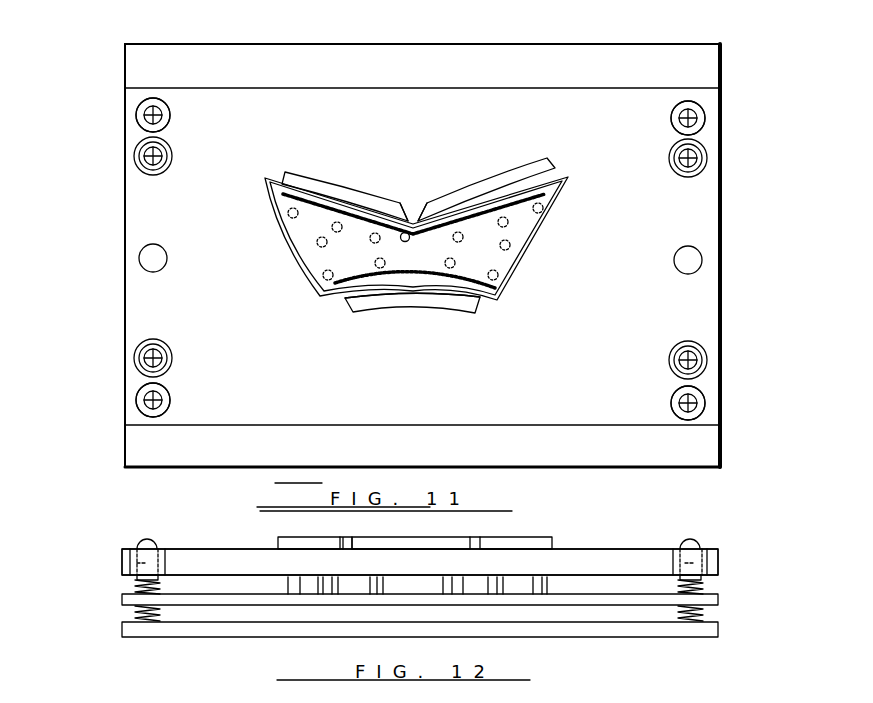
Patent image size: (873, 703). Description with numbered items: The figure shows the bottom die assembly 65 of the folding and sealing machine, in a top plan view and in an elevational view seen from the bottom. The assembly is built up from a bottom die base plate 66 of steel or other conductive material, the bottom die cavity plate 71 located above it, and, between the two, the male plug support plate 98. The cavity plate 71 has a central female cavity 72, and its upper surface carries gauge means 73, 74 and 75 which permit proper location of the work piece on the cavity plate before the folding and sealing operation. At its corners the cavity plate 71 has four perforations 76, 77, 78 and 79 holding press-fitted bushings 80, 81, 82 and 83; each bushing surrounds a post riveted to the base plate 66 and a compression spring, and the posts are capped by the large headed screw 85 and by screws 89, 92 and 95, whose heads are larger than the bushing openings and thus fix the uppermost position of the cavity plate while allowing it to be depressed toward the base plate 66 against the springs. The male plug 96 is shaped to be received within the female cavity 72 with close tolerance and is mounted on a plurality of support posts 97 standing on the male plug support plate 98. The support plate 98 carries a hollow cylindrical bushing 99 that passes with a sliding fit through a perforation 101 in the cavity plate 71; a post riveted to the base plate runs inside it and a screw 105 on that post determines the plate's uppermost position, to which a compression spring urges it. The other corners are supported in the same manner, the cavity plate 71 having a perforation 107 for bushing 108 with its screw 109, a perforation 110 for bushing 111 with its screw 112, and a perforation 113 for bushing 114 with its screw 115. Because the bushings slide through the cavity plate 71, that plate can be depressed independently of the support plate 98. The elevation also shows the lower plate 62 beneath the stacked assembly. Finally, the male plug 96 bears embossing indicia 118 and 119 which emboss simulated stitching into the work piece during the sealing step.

In FIG. 12, the base plate 62 is at (702, 630).
In FIG. 11, the bottom die assembly 65 is at (731, 60).
In FIG. 12, the bottom die assembly 65 is at (240, 552).
In FIG. 11, the bottom die base plate 66 is at (658, 57).
In FIG. 11, the bottom die cavity plate 71 is at (415, 102).
In FIG. 12, the bottom die cavity plate 71 is at (597, 558).
In FIG. 11, the female cavity 72 is at (571, 190).
In FIG. 11, the gauge means 73 is at (307, 177).
In FIG. 12, the gauge means 73 is at (296, 543).
In FIG. 11, the gauge means 74 is at (511, 175).
In FIG. 12, the gauge means 74 is at (517, 547).
In FIG. 11, the gauge means 75 is at (382, 298).
In FIG. 12, the gauge means 75 is at (370, 542).
In FIG. 11, the perforation 76 is at (704, 103).
In FIG. 11, the perforation 77 is at (170, 110).
In FIG. 11, the perforation 78 is at (172, 392).
In FIG. 11, the perforation 79 is at (702, 395).
In FIG. 11, the bushing 80 is at (697, 127).
In FIG. 11, the bushing 81 is at (160, 122).
In FIG. 11, the bushing 82 is at (160, 410).
In FIG. 11, the bushing 83 is at (700, 410).
In FIG. 11, the large headed screw 85 is at (705, 116).
In FIG. 11, the screw 89 is at (137, 112).
In FIG. 11, the screw 92 is at (136, 402).
In FIG. 11, the screw 95 is at (692, 412).
In FIG. 11, the male plug 96 is at (510, 267).
In FIG. 11, the support posts 97 is at (288, 216).
In FIG. 12, the support posts 97 is at (550, 587).
In FIG. 12, the male plug support plate 98 is at (717, 602).
In FIG. 11, the hollow cylindrical bushing 99 is at (698, 168).
In FIG. 11, the perforation 101 is at (695, 175).
In FIG. 11, the screw 105 is at (706, 160).
In FIG. 11, the perforation 107 is at (154, 176).
In FIG. 11, the bushing 108 is at (137, 165).
In FIG. 11, the screw 109 is at (140, 157).
In FIG. 11, the perforation 110 is at (171, 350).
In FIG. 12, the perforation 110 is at (122, 552).
In FIG. 11, the bushing 111 is at (142, 346).
In FIG. 12, the bushing 111 is at (135, 565).
In FIG. 11, the screw 112 is at (140, 358).
In FIG. 12, the screw 112 is at (147, 542).
In FIG. 11, the perforation 113 is at (692, 342).
In FIG. 12, the perforation 113 is at (718, 570).
In FIG. 11, the bushing 114 is at (703, 352).
In FIG. 12, the bushing 114 is at (717, 550).
In FIG. 11, the screw 115 is at (705, 362).
In FIG. 12, the screw 115 is at (688, 545).
In FIG. 11, the embossing indicia 118 is at (411, 232).
In FIG. 11, the embossing indicia 119 is at (415, 265).